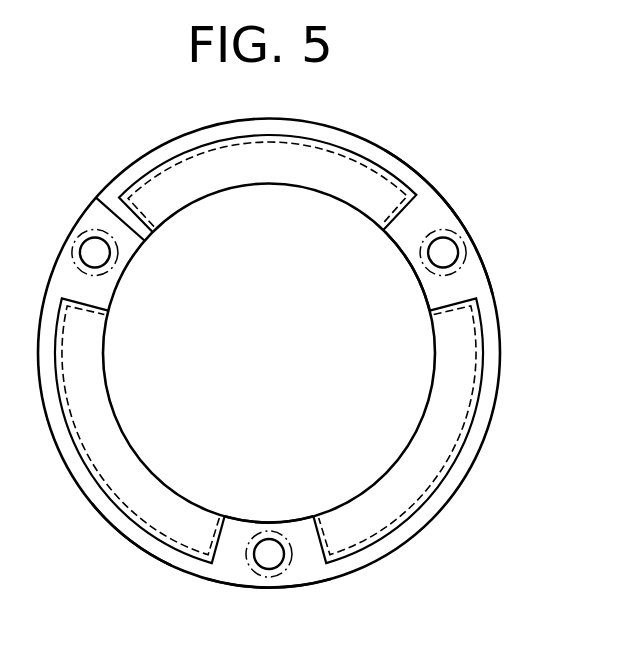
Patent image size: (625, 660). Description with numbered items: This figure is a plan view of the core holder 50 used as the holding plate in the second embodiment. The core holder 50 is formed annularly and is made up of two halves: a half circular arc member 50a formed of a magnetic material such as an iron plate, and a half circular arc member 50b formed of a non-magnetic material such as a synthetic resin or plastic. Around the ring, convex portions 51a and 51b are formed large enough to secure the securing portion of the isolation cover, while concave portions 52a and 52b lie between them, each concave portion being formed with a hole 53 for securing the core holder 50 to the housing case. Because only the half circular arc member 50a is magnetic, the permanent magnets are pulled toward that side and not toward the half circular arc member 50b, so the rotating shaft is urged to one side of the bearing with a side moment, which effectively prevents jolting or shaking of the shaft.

The core holder 50 is at (452, 180).
The half circular arc member 50a is at (465, 218).
The half circular arc member 50b is at (128, 547).
The convex portion 51a is at (357, 176).
The convex portion 51b is at (120, 476).
The concave portion 52a is at (466, 287).
The concave portion 52b is at (226, 568).
The hole 53 is at (449, 252).